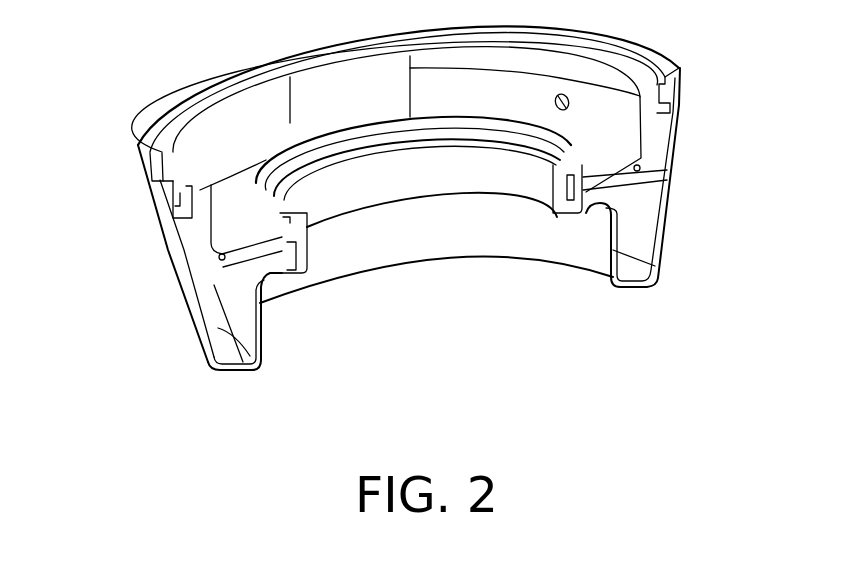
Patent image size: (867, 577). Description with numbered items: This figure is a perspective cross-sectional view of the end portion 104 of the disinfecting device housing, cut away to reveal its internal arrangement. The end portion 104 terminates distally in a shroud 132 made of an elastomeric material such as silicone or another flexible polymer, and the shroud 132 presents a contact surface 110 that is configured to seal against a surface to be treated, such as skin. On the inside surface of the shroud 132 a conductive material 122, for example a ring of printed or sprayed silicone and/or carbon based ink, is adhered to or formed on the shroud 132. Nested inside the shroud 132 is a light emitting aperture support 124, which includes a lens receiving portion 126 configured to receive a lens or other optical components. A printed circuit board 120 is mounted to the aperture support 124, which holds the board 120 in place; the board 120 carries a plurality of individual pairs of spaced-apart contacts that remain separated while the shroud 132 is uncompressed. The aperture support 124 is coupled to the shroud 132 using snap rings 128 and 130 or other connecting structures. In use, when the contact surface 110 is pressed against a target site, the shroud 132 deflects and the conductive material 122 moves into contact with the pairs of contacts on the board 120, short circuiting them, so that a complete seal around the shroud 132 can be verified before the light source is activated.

The end portion 104 is at (108, 80).
The contact surface 110 is at (238, 375).
The printed circuit board 120 is at (215, 288).
The conductive material 122 is at (218, 328).
The light emitting aperture support 124 is at (657, 143).
The lens receiving portion 126 is at (372, 190).
The snap ring 128 is at (672, 82).
The snap ring 130 is at (574, 217).
The shroud 132 is at (160, 223).